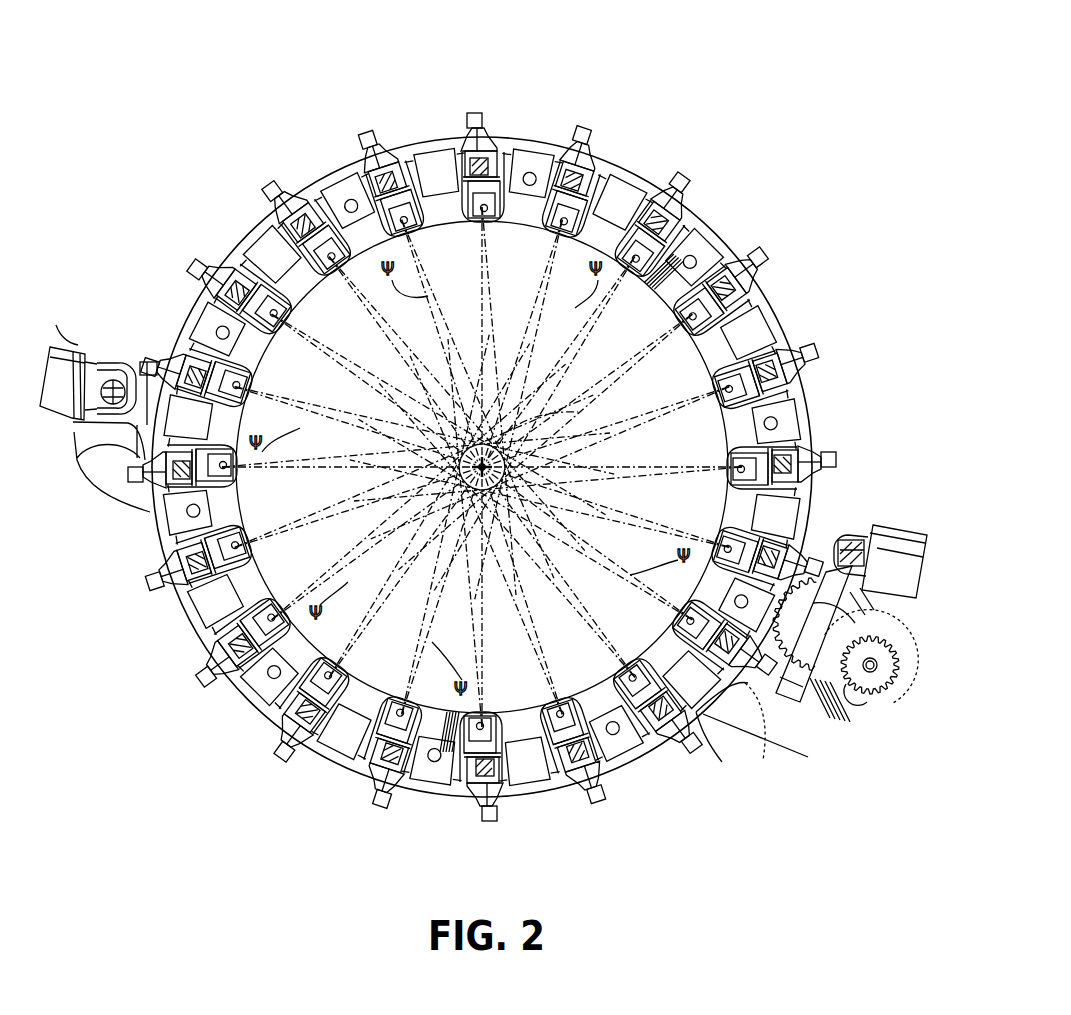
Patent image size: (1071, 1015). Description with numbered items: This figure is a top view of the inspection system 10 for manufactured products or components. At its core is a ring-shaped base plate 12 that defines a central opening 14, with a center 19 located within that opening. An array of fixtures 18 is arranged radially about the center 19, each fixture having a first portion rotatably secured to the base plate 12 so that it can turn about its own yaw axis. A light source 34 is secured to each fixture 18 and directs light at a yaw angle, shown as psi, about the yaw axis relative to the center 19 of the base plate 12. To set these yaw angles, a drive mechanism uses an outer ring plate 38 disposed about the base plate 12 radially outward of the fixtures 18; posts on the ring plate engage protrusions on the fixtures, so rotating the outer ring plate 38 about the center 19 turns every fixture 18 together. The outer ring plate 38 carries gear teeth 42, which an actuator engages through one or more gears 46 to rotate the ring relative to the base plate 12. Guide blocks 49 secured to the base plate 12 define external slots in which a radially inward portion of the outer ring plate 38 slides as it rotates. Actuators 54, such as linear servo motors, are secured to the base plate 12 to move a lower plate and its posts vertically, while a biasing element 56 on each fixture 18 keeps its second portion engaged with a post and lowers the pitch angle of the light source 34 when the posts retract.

The inspection system 10 is at (739, 52).
The base plate 12 is at (515, 705).
The central opening 14 is at (702, 459).
The fixture 18 is at (603, 160).
The center 19 is at (482, 467).
The light source 34 is at (416, 200).
The outer ring plate 38 is at (706, 735).
The gear teeth 42 is at (748, 745).
The gear 46 is at (845, 638).
The guide block 49 is at (340, 182).
The actuator 54 is at (60, 345).
The biasing element 56 is at (585, 126).